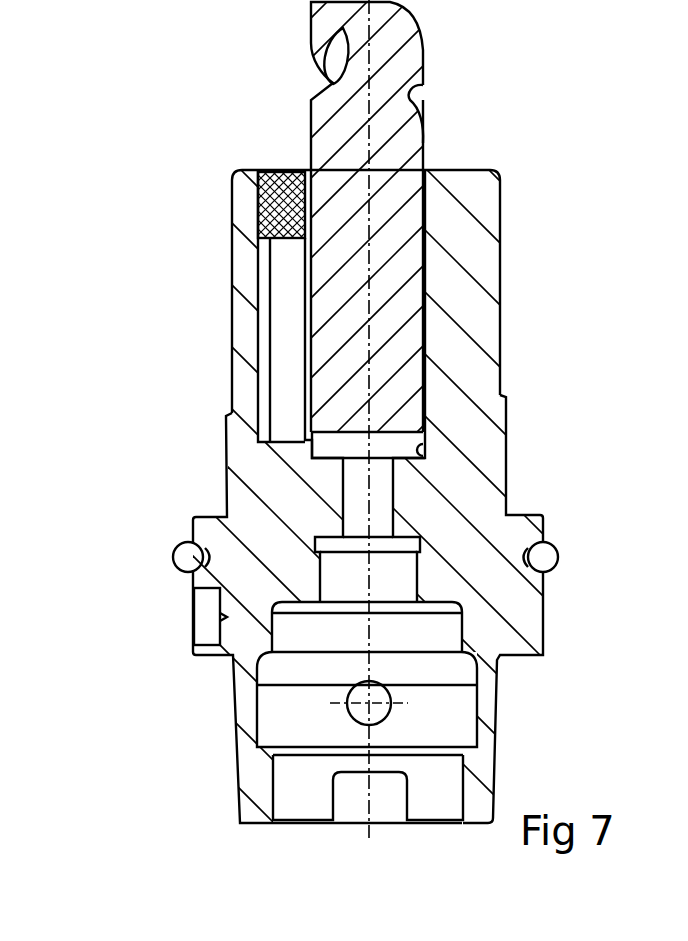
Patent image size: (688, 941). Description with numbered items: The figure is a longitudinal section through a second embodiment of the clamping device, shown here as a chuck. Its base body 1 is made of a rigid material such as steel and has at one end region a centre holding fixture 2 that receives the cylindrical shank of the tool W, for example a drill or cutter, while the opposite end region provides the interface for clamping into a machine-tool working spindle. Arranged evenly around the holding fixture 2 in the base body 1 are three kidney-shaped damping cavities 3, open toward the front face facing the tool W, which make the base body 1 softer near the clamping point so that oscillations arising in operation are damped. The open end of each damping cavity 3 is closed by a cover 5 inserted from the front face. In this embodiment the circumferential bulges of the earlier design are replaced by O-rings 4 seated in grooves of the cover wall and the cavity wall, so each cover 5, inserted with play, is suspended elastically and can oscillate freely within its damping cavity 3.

The base body 1 is at (263, 483).
The holding fixture 2 is at (427, 460).
The damping cavities 3 is at (262, 333).
The O-rings 4 is at (236, 170).
The cover 5 is at (278, 170).
The tool W is at (420, 57).